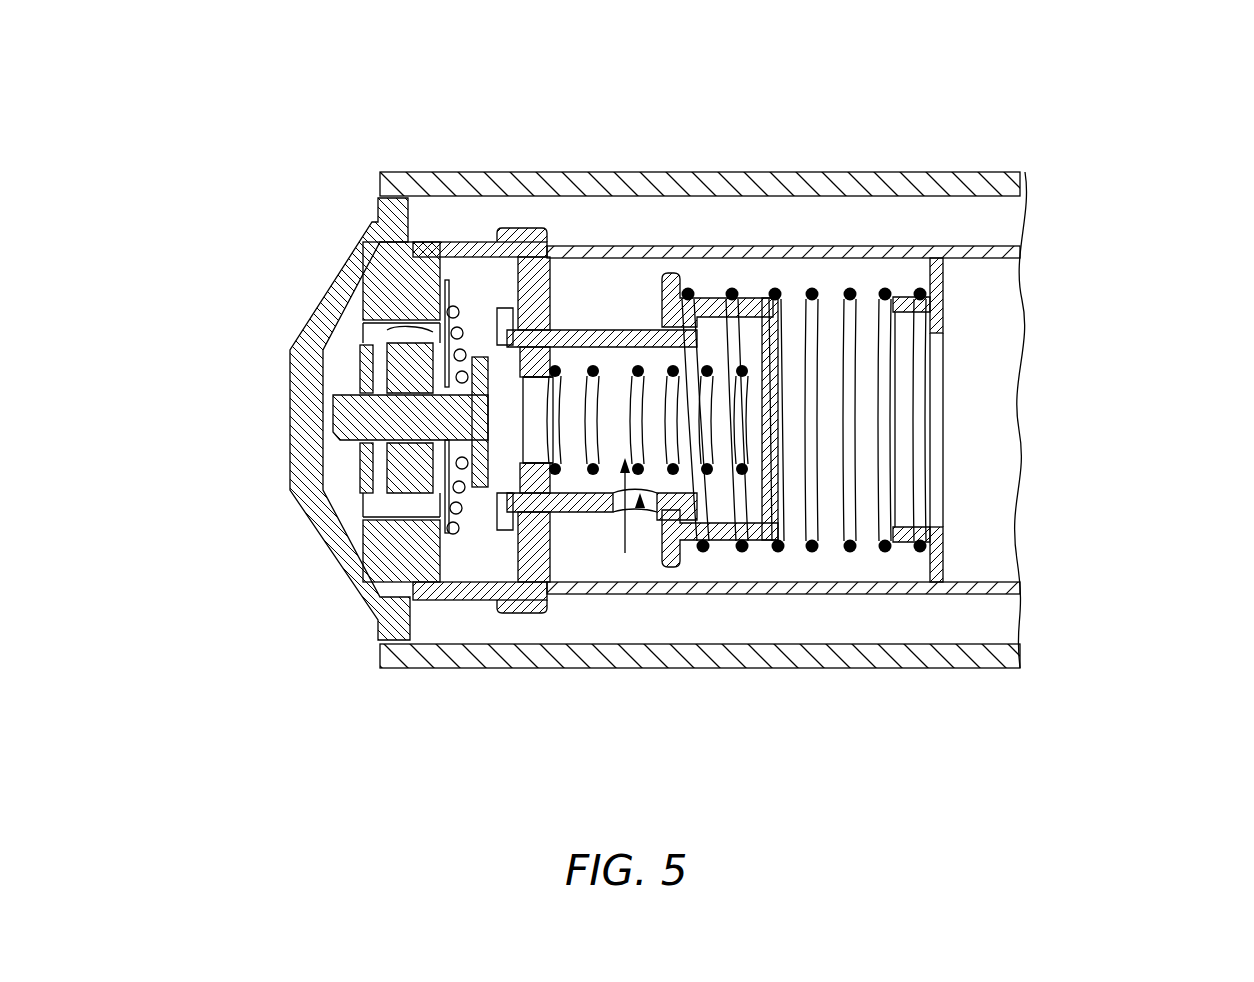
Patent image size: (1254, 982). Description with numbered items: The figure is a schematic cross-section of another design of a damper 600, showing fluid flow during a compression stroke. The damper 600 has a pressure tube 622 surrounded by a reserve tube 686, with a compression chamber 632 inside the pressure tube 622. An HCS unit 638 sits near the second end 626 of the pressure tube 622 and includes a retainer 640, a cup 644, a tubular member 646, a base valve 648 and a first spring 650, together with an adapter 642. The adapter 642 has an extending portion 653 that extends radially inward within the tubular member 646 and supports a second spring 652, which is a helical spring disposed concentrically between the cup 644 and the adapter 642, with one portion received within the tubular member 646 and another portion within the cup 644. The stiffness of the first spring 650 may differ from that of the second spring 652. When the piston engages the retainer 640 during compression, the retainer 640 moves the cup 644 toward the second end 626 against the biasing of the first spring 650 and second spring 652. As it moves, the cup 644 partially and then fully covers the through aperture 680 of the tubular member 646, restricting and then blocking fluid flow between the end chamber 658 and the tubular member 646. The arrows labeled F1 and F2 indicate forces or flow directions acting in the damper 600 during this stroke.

The damper 600 is at (1121, 82).
The pressure tube 622 is at (968, 228).
The second end 626 is at (354, 183).
The compression chamber 632 is at (976, 362).
The HCS unit 638 is at (800, 574).
The retainer 640 is at (940, 481).
The adapter 642 is at (465, 242).
The cup 644 is at (717, 297).
The tubular member 646 is at (582, 512).
The base valve 648 is at (334, 375).
The first spring 650 is at (850, 290).
The second spring 652 is at (593, 366).
The extending portion 653 is at (532, 364).
The end chamber 658 is at (768, 266).
The through aperture 680 is at (641, 508).
The reserve tube 686 is at (890, 686).
The first force F1 is at (872, 409).
The second force F2 is at (625, 550).